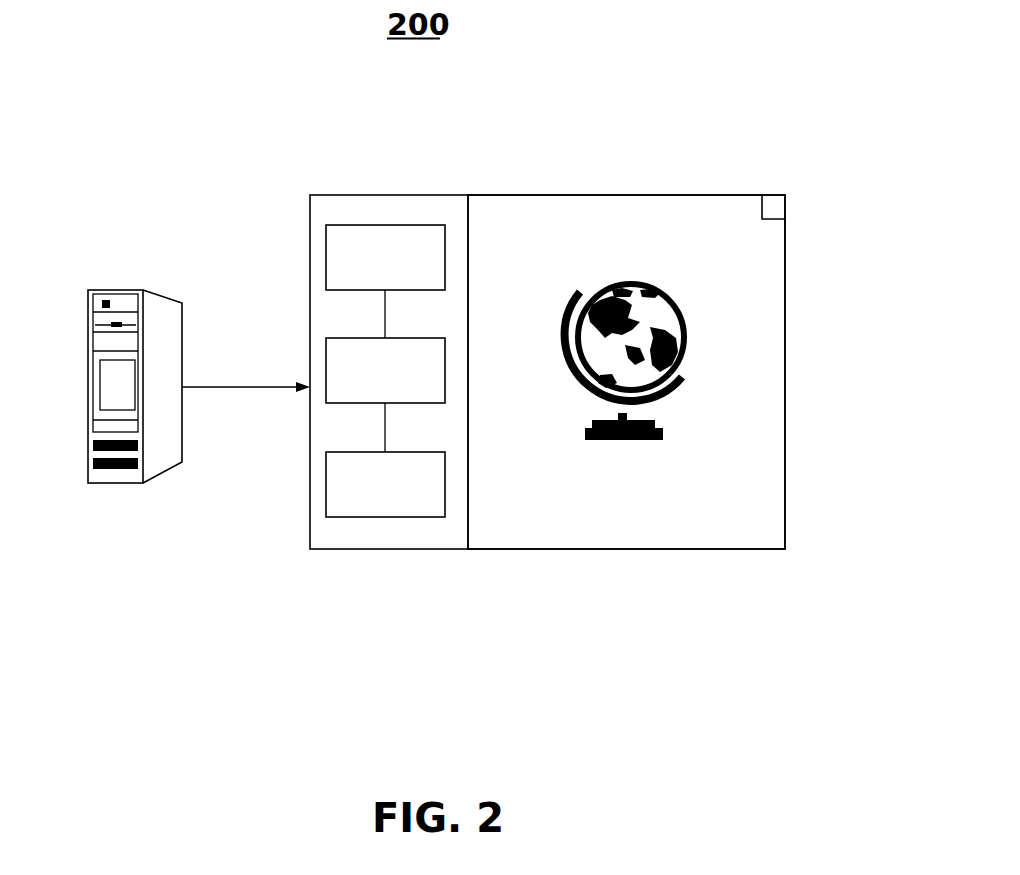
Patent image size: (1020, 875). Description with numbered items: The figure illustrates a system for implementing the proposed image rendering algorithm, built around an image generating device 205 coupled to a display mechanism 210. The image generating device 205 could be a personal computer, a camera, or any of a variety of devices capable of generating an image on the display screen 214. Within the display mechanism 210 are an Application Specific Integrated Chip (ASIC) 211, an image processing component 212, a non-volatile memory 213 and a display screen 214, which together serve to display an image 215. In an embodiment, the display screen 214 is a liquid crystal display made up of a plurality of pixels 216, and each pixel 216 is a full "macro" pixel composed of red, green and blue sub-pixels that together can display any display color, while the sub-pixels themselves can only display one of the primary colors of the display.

The image generating device 205 is at (130, 268).
The display mechanism 210 is at (537, 122).
The Application Specific Integrated Chip (ASIC) 211 is at (333, 226).
The image processing component 212 is at (343, 390).
The non-volatile memory 213 is at (358, 517).
The display screen 214 is at (753, 534).
The image 215 is at (690, 347).
The pixel 216 is at (785, 219).